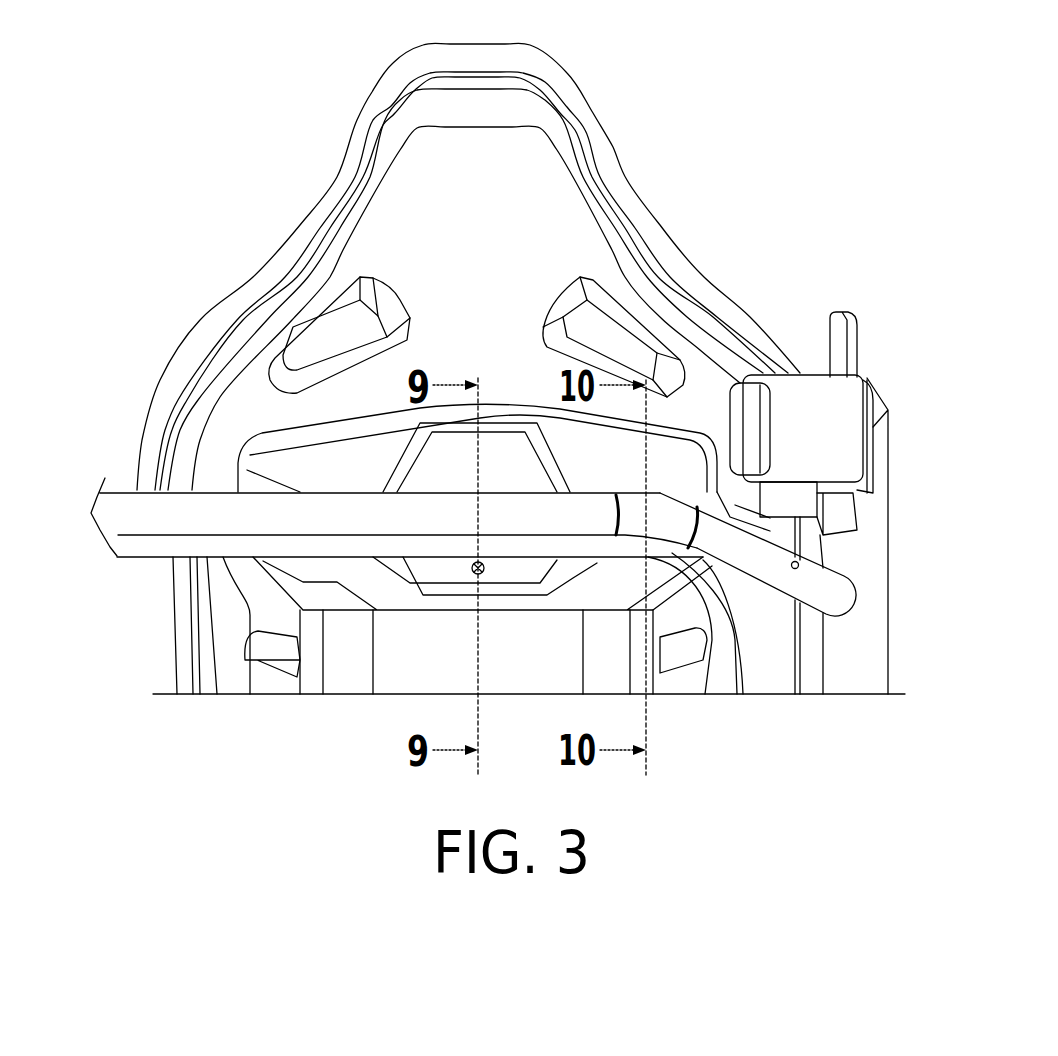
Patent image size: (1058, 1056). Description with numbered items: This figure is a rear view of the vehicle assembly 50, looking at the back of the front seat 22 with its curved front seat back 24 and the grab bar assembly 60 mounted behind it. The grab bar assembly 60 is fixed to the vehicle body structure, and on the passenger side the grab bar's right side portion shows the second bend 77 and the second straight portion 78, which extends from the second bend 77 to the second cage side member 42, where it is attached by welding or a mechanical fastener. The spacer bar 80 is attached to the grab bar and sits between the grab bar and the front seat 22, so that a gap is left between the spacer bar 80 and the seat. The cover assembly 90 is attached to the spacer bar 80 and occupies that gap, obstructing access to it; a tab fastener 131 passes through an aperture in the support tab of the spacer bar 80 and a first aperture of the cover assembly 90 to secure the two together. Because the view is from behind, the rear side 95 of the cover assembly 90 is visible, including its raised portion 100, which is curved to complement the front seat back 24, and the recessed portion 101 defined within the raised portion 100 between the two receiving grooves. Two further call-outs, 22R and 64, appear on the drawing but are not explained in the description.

The front seat 22 is at (471, 260).
The rear side of seat back 22R is at (577, 87).
The front seat back 24 is at (532, 210).
The second cage side member 42 is at (877, 553).
The vehicle assembly 50 is at (686, 244).
The grab bar assembly 60 is at (220, 487).
The cross tube 64 is at (120, 500).
The second bend 77 is at (663, 510).
The second straight portion 78 is at (817, 580).
The spacer bar 80 is at (147, 547).
The cover assembly 90 is at (253, 428).
The rear side 95 is at (603, 476).
The raised portion 100 is at (331, 463).
The recessed portion 101 is at (502, 433).
The tab fastener 131 is at (471, 571).